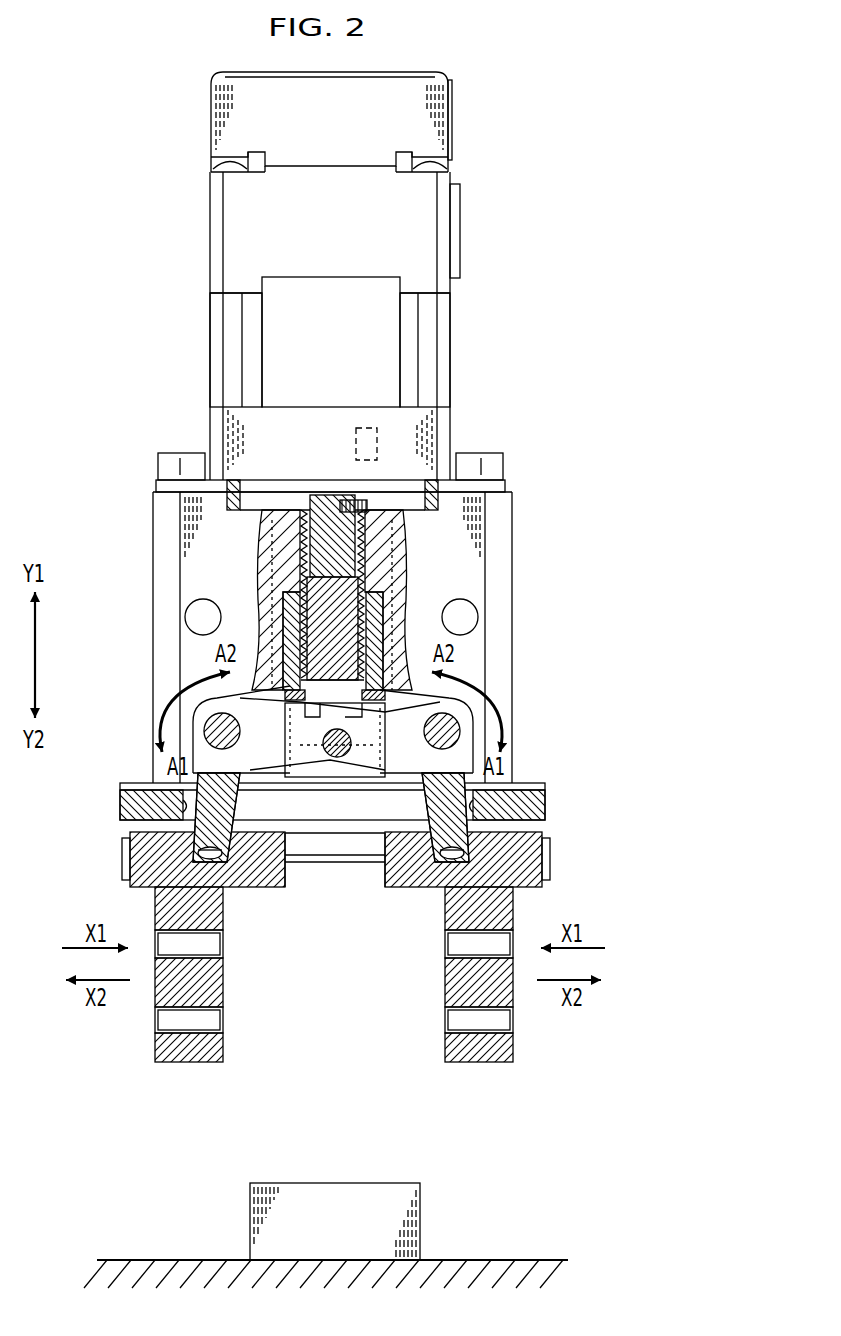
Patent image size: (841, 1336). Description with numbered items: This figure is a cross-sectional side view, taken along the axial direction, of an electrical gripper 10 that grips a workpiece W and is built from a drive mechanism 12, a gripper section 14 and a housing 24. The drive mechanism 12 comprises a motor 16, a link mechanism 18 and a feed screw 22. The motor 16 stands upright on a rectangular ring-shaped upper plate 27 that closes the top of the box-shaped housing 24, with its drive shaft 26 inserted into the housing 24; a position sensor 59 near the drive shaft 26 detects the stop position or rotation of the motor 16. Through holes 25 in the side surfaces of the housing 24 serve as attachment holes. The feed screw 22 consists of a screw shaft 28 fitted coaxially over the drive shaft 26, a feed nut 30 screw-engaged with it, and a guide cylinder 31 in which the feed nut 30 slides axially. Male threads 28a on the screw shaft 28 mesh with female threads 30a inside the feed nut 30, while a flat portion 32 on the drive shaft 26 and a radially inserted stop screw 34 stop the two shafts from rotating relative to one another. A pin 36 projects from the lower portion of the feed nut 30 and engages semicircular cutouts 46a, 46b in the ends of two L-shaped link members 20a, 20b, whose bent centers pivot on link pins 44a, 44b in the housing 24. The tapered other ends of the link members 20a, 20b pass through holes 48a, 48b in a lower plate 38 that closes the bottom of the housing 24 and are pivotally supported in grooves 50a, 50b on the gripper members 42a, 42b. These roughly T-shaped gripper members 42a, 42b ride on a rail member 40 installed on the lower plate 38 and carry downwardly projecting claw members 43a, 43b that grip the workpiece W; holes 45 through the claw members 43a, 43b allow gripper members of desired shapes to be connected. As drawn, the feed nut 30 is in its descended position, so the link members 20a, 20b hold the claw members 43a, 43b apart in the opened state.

The electrical gripper 10 is at (550, 120).
The drive mechanism 12 is at (466, 585).
The gripper section 14 is at (530, 1050).
The motor 16 is at (463, 233).
The link mechanism 18 is at (200, 703).
The link member 20a is at (190, 853).
The link member 20b is at (477, 855).
The feed screw 22 is at (392, 620).
The housing 24 is at (163, 537).
The through holes 25 is at (462, 617).
The drive shaft 26 is at (340, 497).
The upper plate 27 is at (487, 478).
The screw shaft 28 is at (310, 588).
The male threads 28a is at (368, 553).
The feed nut 30 is at (397, 616).
The female threads 30a is at (283, 617).
The guide cylinder 31 is at (290, 520).
The flat portion 32 is at (296, 548).
The stop screw 34 is at (382, 517).
The pin 36 is at (333, 730).
The lower plate 38 is at (522, 793).
The rail member 40 is at (330, 858).
The gripper member 42a is at (182, 917).
The gripper member 42b is at (487, 917).
The claw member 43a is at (190, 1052).
The claw member 43b is at (480, 1052).
The link pin 44a is at (218, 733).
The link pin 44b is at (450, 732).
The holes 45 is at (177, 1008).
The cutout 46a is at (323, 743).
The cutout 46b is at (352, 743).
The hole 48a is at (183, 812).
The hole 48b is at (477, 812).
The groove 50a is at (227, 877).
The groove 50b is at (435, 877).
The position sensor 59 is at (369, 425).
The workpiece W is at (332, 1205).